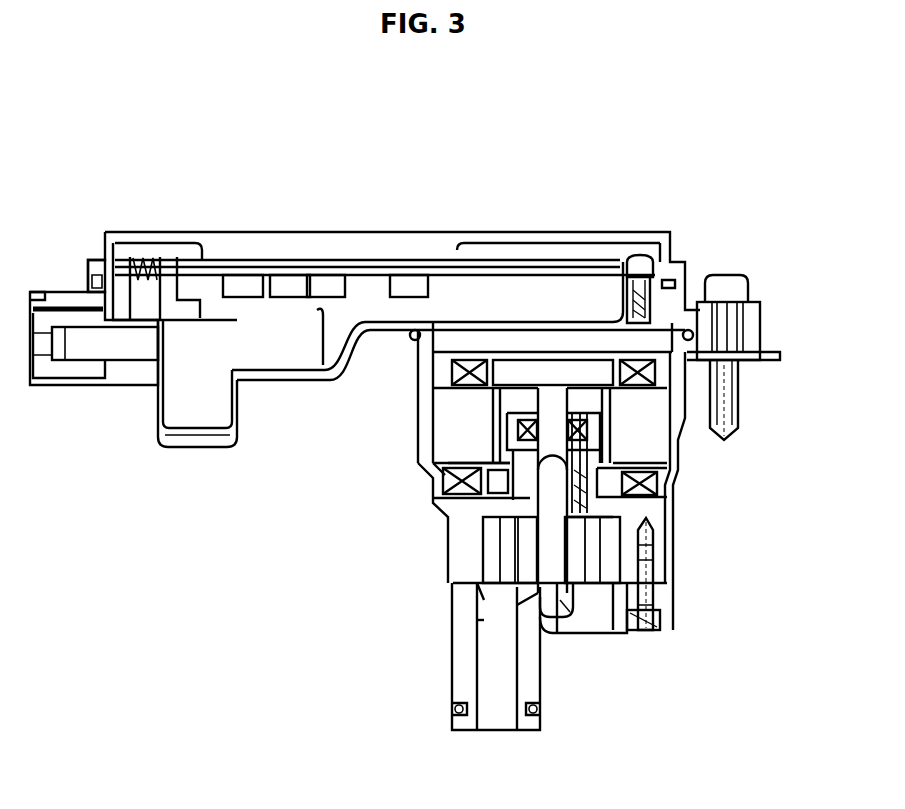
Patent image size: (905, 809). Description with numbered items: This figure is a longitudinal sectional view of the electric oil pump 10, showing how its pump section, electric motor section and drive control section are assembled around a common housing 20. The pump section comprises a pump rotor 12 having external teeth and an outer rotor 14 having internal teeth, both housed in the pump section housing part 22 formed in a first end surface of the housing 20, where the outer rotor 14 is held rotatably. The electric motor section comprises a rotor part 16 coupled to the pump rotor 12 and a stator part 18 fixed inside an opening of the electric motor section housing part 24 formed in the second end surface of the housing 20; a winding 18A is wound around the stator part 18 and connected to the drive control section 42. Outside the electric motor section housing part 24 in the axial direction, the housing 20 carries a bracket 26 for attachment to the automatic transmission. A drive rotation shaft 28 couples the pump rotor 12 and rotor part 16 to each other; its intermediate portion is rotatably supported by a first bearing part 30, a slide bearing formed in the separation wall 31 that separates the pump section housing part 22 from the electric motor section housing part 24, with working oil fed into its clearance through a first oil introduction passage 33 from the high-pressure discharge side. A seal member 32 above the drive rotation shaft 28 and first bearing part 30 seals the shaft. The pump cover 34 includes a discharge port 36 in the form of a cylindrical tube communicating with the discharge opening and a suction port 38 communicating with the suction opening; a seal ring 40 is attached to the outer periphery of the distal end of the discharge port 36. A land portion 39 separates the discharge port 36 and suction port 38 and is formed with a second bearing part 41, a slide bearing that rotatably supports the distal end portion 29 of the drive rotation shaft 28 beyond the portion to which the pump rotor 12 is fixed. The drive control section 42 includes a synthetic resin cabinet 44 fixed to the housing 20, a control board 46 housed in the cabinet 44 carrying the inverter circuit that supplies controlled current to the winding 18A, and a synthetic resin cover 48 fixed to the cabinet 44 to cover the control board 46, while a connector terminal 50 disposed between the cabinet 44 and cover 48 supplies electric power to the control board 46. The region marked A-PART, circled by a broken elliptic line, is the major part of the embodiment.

The electric oil pump 10 is at (520, 228).
The pump rotor 12 is at (663, 588).
The outer rotor 14 is at (527, 593).
The rotor part 16 is at (490, 395).
The stator part 18 is at (657, 442).
The winding 18A is at (657, 483).
The housing 20 is at (657, 520).
The pump section housing part 22 is at (525, 548).
The electric motor section housing part 24 is at (450, 342).
The bracket 26 is at (750, 350).
The drive rotation shaft 28 is at (653, 557).
The distal end portion 29 is at (578, 633).
The first bearing part 30 is at (455, 483).
The separation wall 31 is at (436, 503).
The seal member 32 is at (578, 400).
The first oil introduction passage 33 is at (493, 500).
The pump cover 34 is at (477, 625).
The discharge port 36 is at (507, 670).
The suction port 38 is at (628, 633).
The land portion 39 is at (515, 622).
The seal ring 40 is at (450, 708).
The second bearing part 41 is at (477, 605).
The drive control section 42 is at (90, 262).
The cabinet 44 is at (128, 373).
The control board 46 is at (373, 275).
The cover 48 is at (287, 245).
The connector terminal 50 is at (75, 348).
The A-part A-PART is at (667, 635).